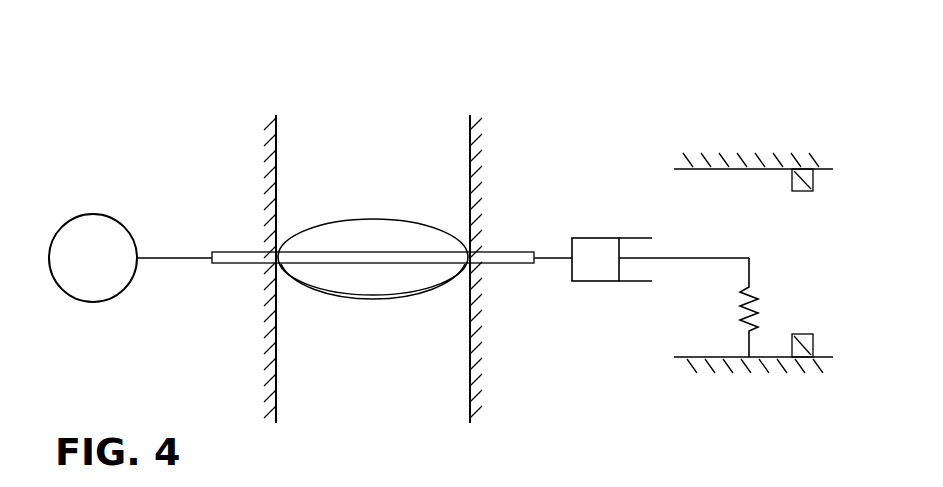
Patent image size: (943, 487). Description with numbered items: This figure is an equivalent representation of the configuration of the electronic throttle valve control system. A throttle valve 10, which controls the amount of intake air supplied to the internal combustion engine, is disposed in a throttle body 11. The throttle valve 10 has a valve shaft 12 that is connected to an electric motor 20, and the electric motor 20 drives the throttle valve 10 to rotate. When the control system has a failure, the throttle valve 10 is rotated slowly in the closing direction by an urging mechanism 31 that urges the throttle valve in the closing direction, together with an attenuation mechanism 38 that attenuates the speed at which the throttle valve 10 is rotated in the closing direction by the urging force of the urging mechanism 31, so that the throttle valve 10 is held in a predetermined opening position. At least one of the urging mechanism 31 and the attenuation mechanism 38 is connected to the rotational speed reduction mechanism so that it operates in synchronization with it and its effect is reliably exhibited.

The electric motor 20 is at (91, 215).
The valve shaft 12 is at (229, 252).
The throttle body 11 is at (277, 130).
The throttle valve 10 is at (365, 219).
The attenuation mechanism 38 is at (595, 238).
The urging mechanism 31 is at (755, 300).